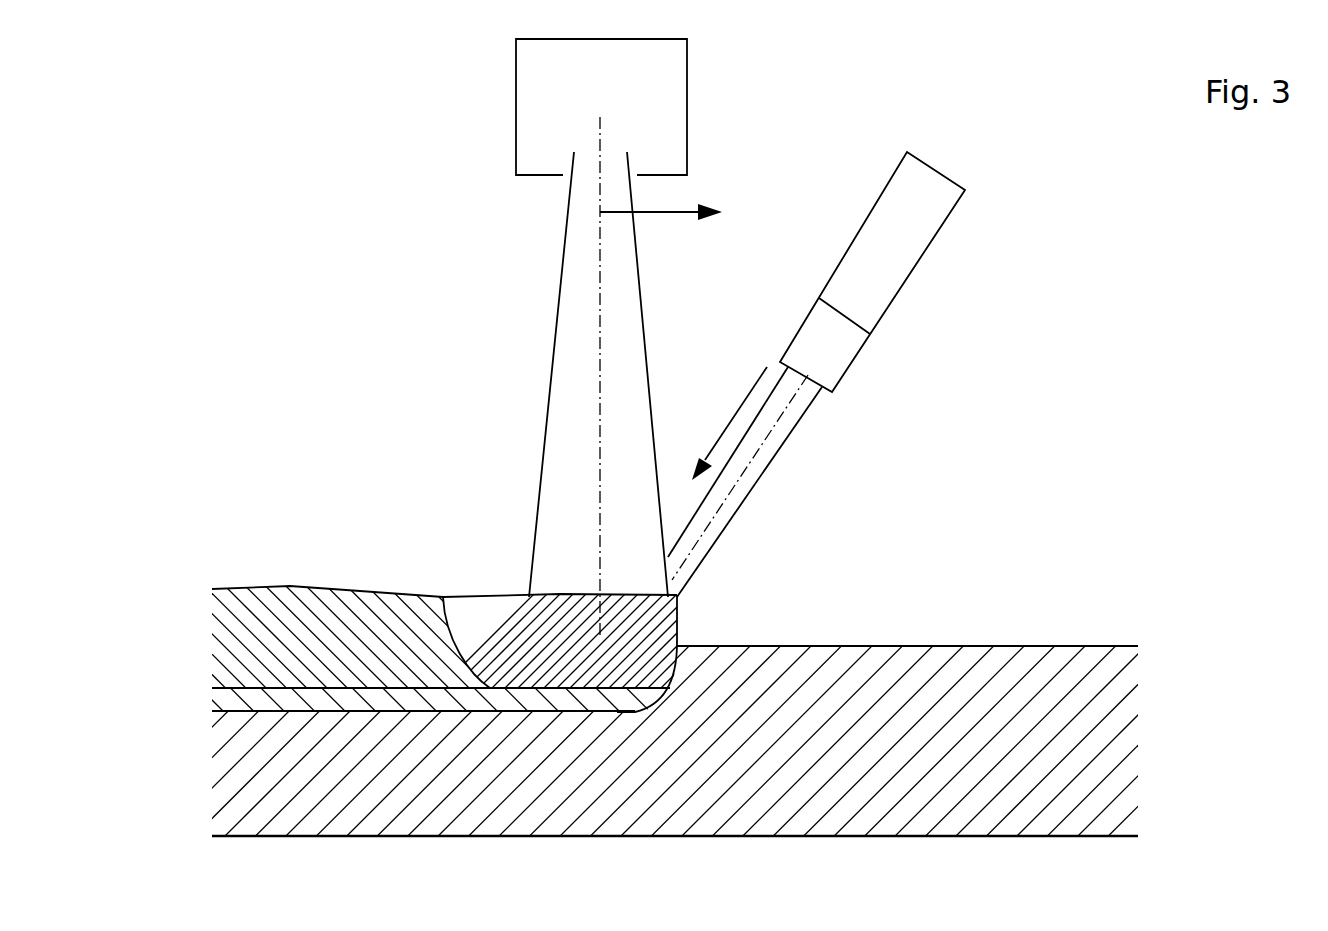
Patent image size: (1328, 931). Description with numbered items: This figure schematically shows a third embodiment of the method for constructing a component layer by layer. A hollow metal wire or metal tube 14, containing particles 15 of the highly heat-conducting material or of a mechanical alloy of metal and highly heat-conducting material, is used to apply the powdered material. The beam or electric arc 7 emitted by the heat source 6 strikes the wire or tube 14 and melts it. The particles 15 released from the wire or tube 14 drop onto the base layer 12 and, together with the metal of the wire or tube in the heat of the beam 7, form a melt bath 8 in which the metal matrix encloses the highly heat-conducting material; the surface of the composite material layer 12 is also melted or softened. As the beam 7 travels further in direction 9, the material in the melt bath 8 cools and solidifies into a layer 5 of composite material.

The layer of composite material 5 is at (290, 588).
The heat source 6 is at (516, 72).
The beam 7 is at (643, 308).
The melt bath 8 is at (497, 595).
The direction 9 is at (673, 196).
The base layer 12 is at (1097, 646).
The metal tube 14 is at (778, 438).
The particles 15 is at (717, 508).